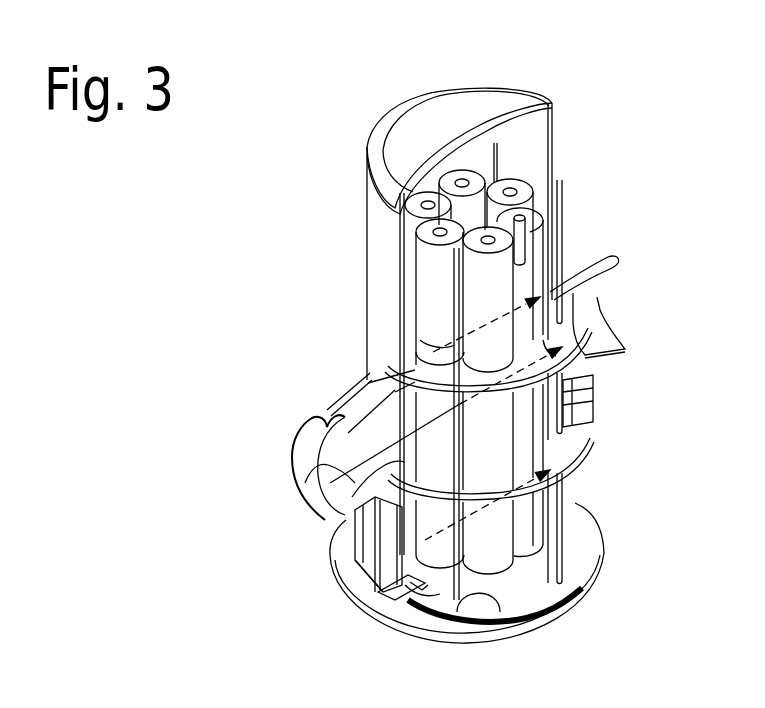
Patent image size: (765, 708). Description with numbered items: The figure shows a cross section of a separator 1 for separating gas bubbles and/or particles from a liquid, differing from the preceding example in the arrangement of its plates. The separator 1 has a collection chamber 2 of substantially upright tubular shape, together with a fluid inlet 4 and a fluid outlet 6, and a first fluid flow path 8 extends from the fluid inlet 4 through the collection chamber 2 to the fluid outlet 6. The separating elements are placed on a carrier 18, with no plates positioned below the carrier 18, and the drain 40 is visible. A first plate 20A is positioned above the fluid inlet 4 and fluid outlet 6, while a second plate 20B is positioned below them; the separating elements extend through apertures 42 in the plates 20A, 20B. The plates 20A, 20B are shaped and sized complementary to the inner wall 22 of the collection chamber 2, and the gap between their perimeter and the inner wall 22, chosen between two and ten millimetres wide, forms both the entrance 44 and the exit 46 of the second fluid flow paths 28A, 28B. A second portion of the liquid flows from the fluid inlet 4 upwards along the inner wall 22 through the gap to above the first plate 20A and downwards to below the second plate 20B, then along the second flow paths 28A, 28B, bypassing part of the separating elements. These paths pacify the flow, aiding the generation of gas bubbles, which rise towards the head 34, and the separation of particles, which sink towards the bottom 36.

The separator 1 is at (569, 92).
The collection chamber 2 is at (367, 258).
The fluid inlet 4 is at (290, 460).
The fluid outlet 6 is at (600, 330).
The first fluid flow path 8 is at (320, 467).
The carrier 18 is at (590, 508).
The first plate 20A is at (590, 358).
The second plate 20B is at (578, 463).
The inner wall 22 is at (392, 598).
The second fluid flow path 28A is at (437, 348).
The second fluid flow path 28B is at (428, 603).
The head 34 is at (473, 148).
The bottom 36 is at (527, 640).
The drain 40 is at (478, 603).
The apertures 42 is at (400, 537).
The entrance 44 is at (425, 352).
The exit 46 is at (563, 290).